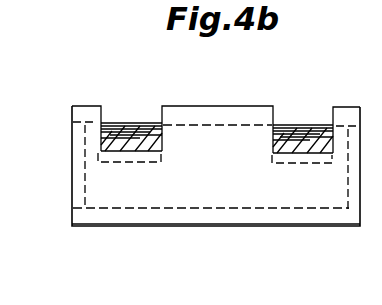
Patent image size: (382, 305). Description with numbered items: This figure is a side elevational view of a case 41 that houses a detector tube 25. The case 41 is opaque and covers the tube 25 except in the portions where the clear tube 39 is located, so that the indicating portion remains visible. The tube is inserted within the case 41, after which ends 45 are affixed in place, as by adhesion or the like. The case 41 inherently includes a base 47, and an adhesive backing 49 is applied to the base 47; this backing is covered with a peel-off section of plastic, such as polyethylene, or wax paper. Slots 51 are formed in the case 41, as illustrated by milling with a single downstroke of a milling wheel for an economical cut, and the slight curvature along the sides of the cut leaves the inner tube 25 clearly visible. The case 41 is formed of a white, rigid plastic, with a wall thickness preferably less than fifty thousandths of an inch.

The detector tube 25 is at (292, 124).
The clear tube 39 is at (127, 125).
The case 41 is at (92, 104).
The ends 45 is at (84, 175).
The base 47 is at (176, 215).
The adhesive backing 49 is at (263, 227).
The slots 51 is at (333, 108).